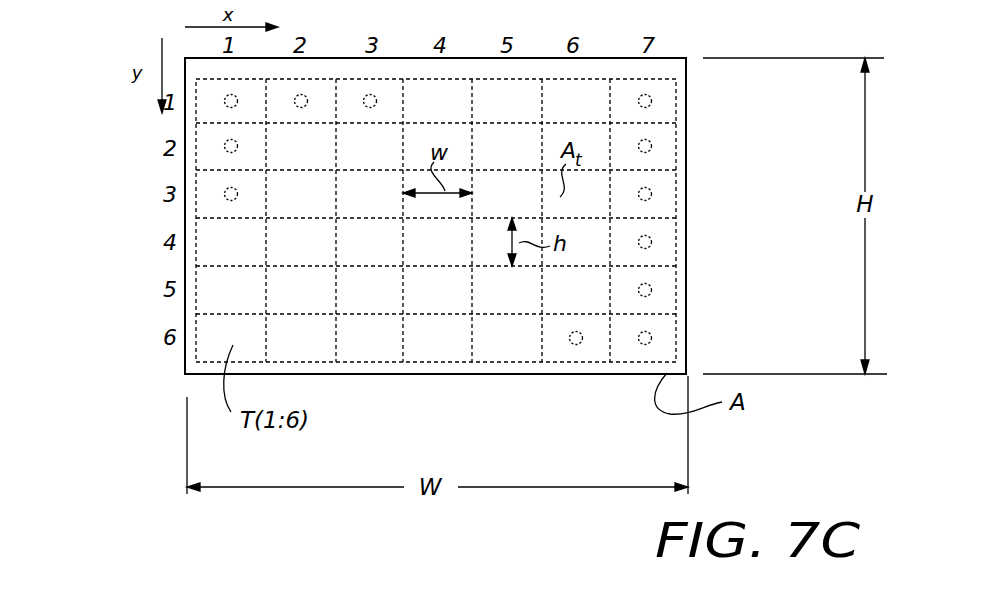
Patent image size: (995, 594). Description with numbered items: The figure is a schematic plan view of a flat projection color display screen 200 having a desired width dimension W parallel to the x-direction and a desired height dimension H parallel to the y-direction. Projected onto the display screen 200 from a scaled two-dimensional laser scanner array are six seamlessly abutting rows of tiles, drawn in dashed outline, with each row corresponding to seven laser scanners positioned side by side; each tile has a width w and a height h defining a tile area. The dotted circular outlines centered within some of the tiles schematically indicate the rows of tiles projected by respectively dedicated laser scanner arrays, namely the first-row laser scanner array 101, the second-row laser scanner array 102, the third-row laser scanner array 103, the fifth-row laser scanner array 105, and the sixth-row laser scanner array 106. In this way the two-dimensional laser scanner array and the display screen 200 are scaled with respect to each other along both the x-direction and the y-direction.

The laser scanner array 101 is at (658, 97).
The laser scanner array 102 is at (658, 142).
The laser scanner array 103 is at (658, 190).
The laser scanner array 105 is at (658, 285).
The laser scanner array 106 is at (658, 333).
The display screen 200 is at (142, 304).